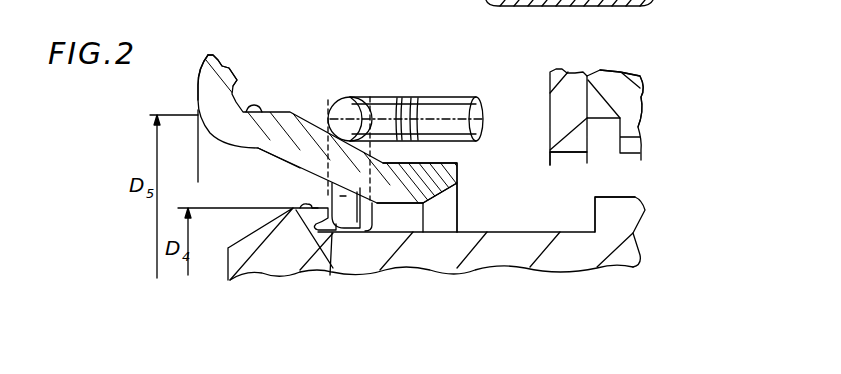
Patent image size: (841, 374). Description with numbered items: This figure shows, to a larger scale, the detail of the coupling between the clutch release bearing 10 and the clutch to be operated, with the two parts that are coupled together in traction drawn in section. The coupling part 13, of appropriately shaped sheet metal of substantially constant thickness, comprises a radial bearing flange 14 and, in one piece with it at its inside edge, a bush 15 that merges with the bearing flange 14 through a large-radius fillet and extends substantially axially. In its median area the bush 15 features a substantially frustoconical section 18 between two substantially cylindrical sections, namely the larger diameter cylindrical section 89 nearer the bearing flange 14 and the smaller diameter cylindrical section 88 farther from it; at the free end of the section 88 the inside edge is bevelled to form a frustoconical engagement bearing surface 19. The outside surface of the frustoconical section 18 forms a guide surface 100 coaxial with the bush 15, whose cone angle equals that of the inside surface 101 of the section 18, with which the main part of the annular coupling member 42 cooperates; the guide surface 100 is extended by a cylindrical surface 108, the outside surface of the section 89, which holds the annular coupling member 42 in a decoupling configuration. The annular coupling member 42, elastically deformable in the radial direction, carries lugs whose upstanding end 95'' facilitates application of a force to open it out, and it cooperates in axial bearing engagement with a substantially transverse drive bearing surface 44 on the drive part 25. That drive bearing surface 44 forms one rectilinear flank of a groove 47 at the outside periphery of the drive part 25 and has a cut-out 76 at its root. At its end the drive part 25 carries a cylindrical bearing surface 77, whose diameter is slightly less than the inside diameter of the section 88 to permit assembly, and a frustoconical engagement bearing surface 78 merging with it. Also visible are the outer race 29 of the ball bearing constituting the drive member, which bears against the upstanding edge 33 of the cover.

The clutch release bearing 10 is at (639, 71).
The coupling part 13 is at (206, 54).
The bearing flange 14 is at (196, 78).
The bush 15 is at (390, 203).
The frustoconical section 18 is at (350, 110).
The frustoconical engagement bearing surface 19 is at (454, 193).
The drive part 25 is at (228, 279).
The outer race 29 is at (626, 97).
The upstanding edge 33 is at (560, 146).
The annular coupling member 42 is at (404, 99).
The drive bearing surface 44 is at (332, 196).
The groove 47 is at (516, 220).
The cut-out 76 is at (335, 265).
The cylindrical bearing surface 77 is at (304, 211).
The frustoconical engagement bearing surface 78 is at (233, 248).
The smaller diameter cylindrical section 88 is at (452, 176).
The larger diameter cylindrical section 89 is at (274, 123).
The upstanding end 95'' is at (441, 101).
The guide surface 100 is at (310, 114).
The inside surface 101 is at (296, 158).
The cylindrical surface 108 is at (217, 146).